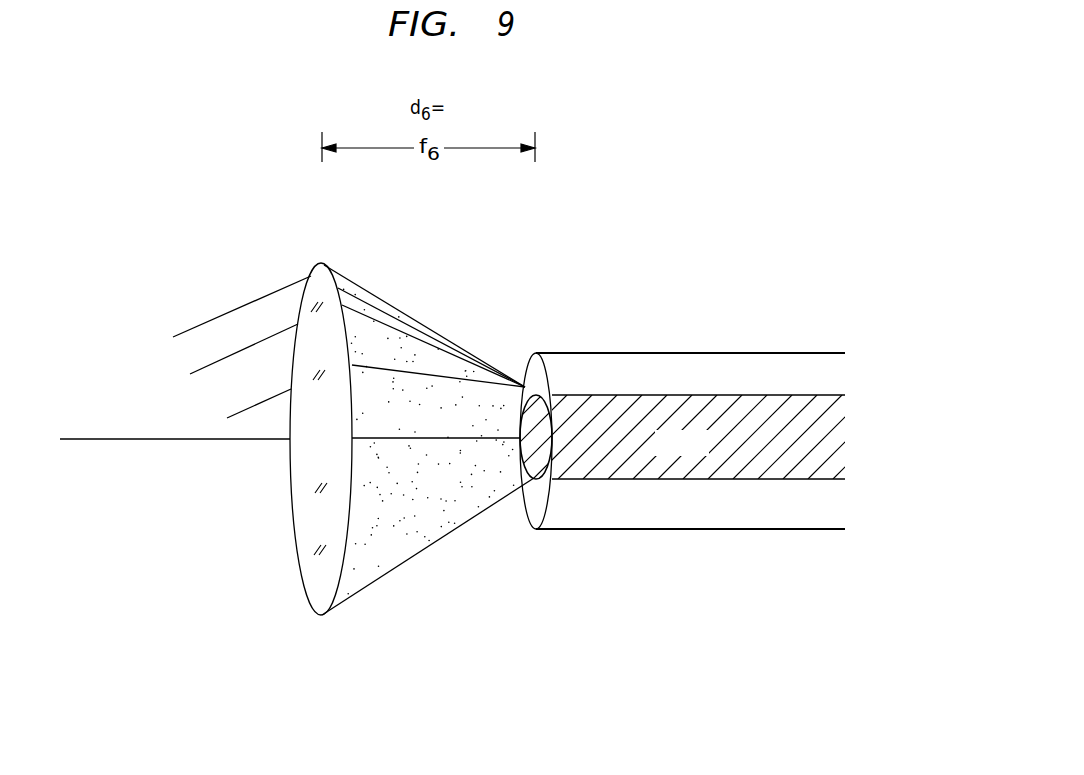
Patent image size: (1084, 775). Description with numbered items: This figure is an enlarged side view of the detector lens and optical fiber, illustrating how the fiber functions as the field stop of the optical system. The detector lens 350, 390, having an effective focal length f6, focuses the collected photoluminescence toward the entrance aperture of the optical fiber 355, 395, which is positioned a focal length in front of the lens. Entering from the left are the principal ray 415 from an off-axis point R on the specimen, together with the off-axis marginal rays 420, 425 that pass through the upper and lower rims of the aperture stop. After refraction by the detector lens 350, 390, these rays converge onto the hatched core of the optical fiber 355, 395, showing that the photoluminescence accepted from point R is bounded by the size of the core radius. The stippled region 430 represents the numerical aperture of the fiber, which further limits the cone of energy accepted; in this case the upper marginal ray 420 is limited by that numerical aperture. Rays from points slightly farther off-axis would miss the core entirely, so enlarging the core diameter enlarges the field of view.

The detector lens 350 is at (321, 470).
The second detector lens 390 is at (322, 617).
The optical fiber 355 is at (687, 405).
The second optical fiber 395 is at (691, 352).
The principal ray 415 is at (208, 366).
The upper marginal ray 420 is at (242, 303).
The lower marginal ray 425 is at (237, 412).
The stippled region 430 is at (438, 495).